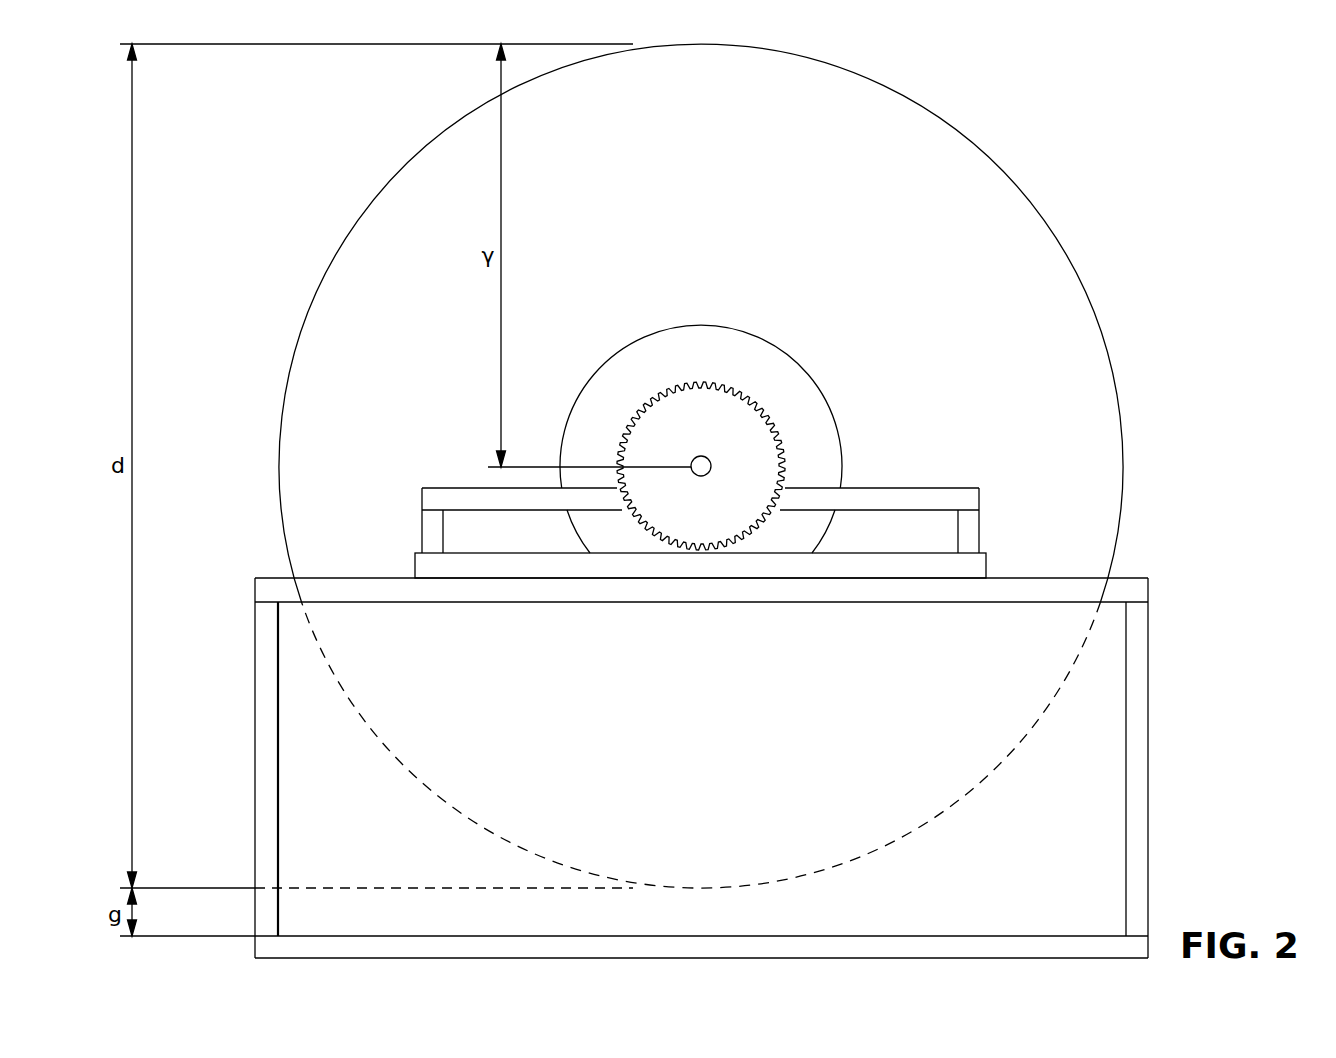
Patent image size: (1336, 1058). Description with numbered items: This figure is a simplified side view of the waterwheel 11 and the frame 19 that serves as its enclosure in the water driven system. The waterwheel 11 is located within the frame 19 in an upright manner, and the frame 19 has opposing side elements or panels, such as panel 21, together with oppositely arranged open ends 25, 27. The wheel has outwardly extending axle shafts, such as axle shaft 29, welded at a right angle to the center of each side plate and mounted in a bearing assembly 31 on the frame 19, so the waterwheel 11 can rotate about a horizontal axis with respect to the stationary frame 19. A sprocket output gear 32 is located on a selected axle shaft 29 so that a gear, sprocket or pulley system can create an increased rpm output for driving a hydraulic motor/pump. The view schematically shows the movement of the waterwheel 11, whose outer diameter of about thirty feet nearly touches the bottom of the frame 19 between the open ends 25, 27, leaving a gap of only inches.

The waterwheel 11 is at (1117, 302).
The frame 19 is at (255, 770).
The side element or panel 21 is at (292, 832).
The open end 25 is at (1174, 778).
The open end 27 is at (228, 656).
The axle shaft 29 is at (703, 460).
The bearing assembly 31 is at (718, 326).
The sprocket output gear 32 is at (692, 381).